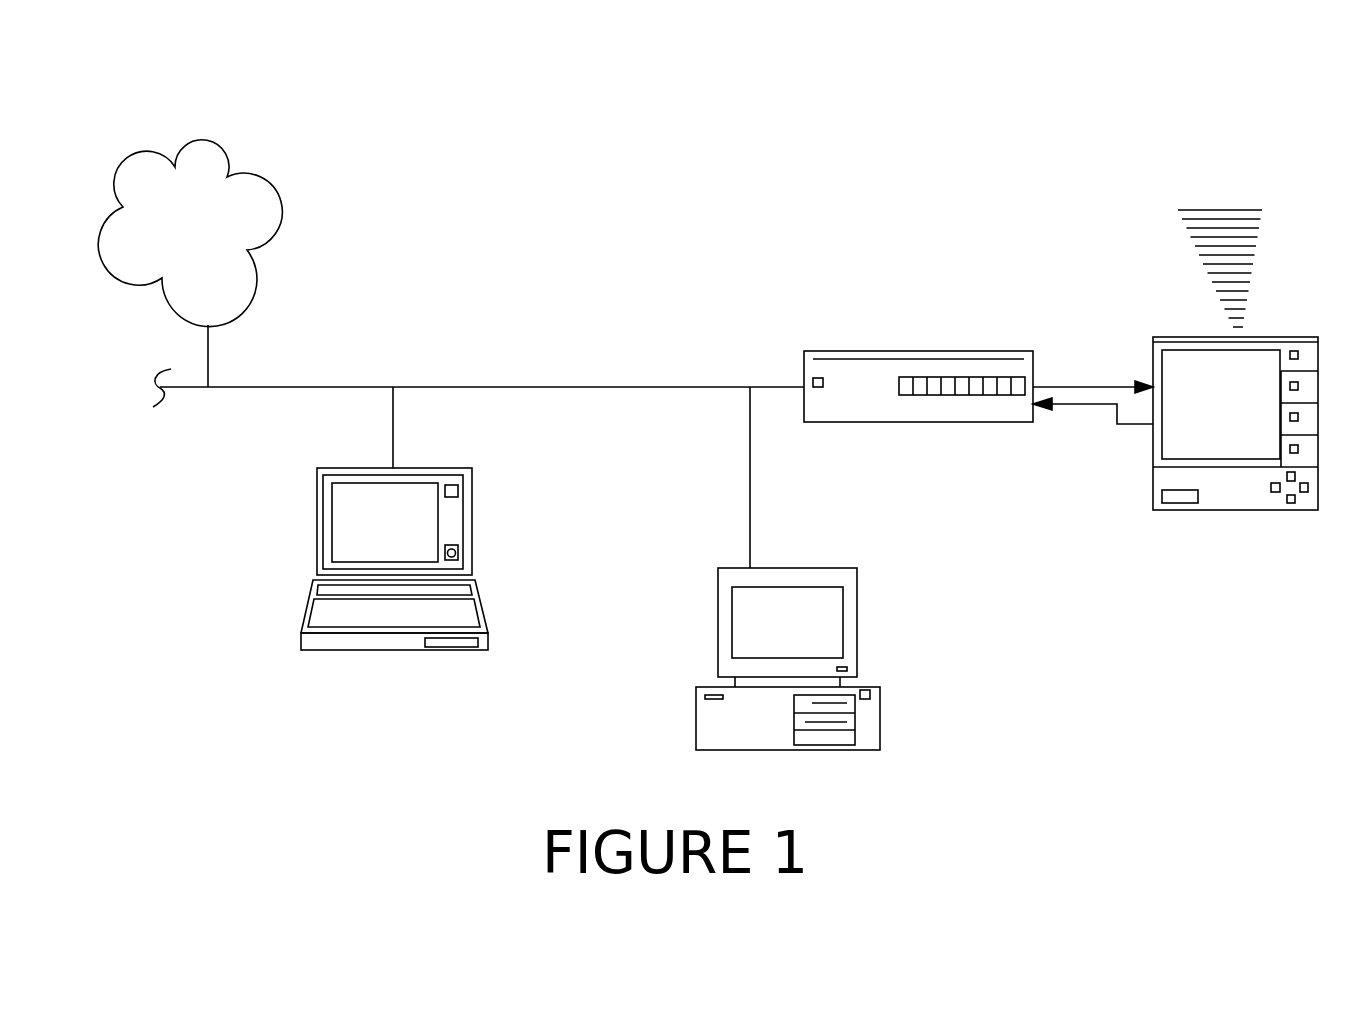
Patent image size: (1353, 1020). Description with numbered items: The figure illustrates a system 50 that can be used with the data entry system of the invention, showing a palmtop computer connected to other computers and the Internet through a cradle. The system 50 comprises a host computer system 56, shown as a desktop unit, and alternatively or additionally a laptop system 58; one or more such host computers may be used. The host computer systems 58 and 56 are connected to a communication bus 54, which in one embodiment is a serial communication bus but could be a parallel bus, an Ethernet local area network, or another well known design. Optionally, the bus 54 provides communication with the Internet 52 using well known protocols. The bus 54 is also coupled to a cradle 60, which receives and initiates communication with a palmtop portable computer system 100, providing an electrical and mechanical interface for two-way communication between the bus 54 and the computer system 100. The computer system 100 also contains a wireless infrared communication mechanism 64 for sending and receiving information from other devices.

The system 50 is at (75, 50).
The Internet 52 is at (272, 180).
The communication bus 54 is at (502, 387).
The host computer system 56 is at (857, 600).
The laptop system 58 is at (439, 467).
The cradle 60 is at (952, 351).
The wireless infrared communication mechanism 64 is at (1180, 250).
The palmtop portable computer system 100 is at (1280, 337).